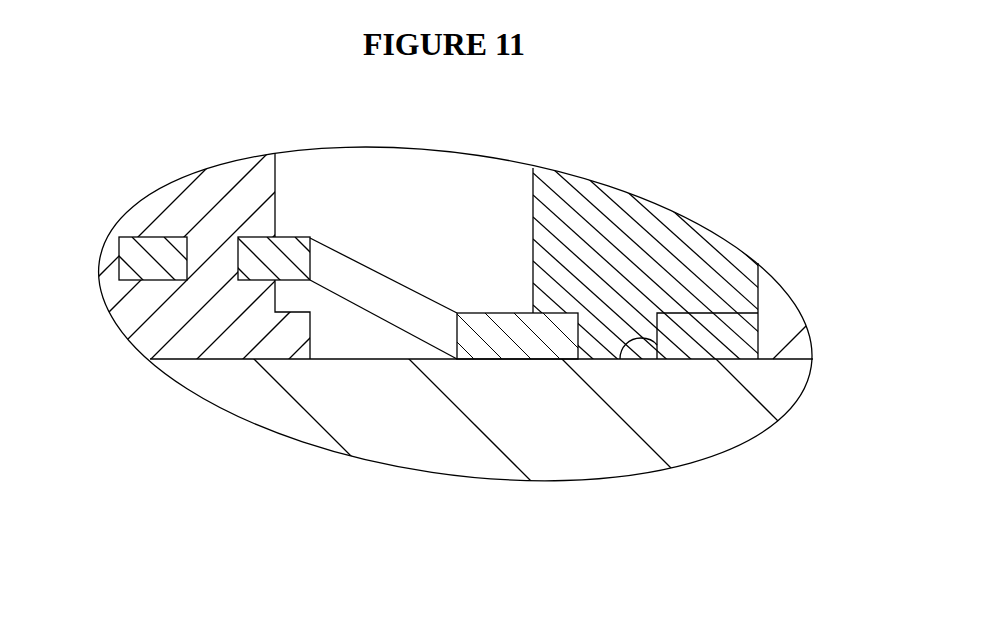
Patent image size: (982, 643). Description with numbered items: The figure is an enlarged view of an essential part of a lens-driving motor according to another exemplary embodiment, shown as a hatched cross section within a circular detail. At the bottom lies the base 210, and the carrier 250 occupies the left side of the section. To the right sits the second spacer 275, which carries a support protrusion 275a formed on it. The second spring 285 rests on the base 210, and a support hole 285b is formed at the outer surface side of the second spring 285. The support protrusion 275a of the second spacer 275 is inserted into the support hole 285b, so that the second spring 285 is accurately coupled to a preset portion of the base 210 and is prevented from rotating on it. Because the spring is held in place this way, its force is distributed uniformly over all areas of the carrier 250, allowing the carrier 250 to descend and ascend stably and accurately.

The base 210 is at (731, 427).
The carrier 250 is at (207, 202).
The second spacer 275 is at (680, 258).
The support protrusion 275a is at (605, 337).
The second spring 285 is at (522, 332).
The support hole 285b is at (620, 359).